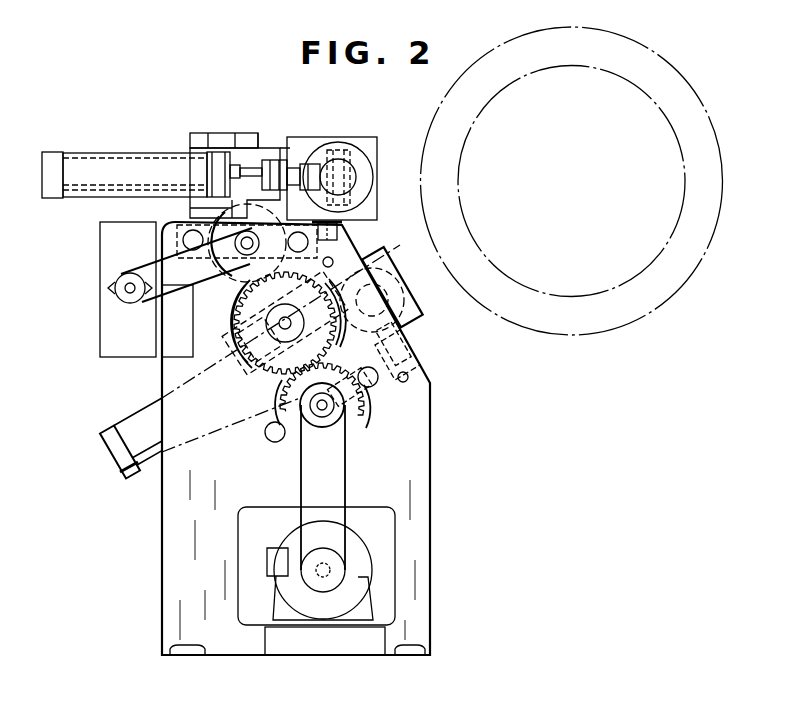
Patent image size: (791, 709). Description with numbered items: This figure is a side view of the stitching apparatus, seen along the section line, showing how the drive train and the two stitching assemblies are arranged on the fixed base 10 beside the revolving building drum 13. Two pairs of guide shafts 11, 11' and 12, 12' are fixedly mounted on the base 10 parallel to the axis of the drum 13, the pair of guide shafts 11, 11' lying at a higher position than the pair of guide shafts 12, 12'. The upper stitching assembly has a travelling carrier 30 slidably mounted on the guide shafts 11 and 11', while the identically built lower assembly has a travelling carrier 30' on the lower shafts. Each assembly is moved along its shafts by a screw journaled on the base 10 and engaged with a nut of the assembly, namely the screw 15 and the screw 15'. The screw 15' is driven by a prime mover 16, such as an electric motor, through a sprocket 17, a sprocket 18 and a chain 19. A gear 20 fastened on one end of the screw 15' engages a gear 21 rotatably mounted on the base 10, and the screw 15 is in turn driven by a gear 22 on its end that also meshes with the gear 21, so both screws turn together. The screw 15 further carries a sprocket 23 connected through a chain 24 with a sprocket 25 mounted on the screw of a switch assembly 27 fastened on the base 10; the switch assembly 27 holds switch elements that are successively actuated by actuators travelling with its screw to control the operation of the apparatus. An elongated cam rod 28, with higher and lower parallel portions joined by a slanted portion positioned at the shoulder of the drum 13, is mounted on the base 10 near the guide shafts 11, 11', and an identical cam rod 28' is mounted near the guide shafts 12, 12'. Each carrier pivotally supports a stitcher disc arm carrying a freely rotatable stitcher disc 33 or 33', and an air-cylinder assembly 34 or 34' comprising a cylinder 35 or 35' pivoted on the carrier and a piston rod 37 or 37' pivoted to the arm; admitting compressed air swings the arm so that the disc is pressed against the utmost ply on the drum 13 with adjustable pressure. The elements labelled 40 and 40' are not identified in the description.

The fixed base 10 is at (160, 567).
The guide shaft 11 is at (282, 240).
The guide shaft 11' is at (146, 243).
The guide shaft 12 is at (392, 391).
The guide shaft 12' is at (259, 454).
The revolving building drum 13 is at (571, 332).
The screw 15 is at (180, 321).
The screw 15' is at (319, 465).
The prime mover 16 is at (370, 545).
The sprocket 17 is at (306, 568).
The sprocket 18 is at (340, 428).
The chain 19 is at (347, 488).
The gear 20 is at (278, 385).
The gear 21 is at (245, 316).
The gear 22 is at (243, 257).
The sprocket 23 is at (254, 222).
The chain 24 is at (136, 303).
The sprocket 25 is at (116, 280).
The switch assembly 27 is at (100, 338).
The cam rod 28 is at (394, 280).
The cam rod 28' is at (429, 355).
The travelling carrier 30 is at (222, 156).
The travelling carrier 30' is at (276, 362).
The stitcher disc 33 is at (332, 159).
The stitcher disc 33' is at (402, 300).
The air-cylinder assembly 34 is at (244, 99).
The air-cylinder assembly 34' is at (281, 348).
The cylinder 35 is at (136, 157).
The cylinder 35' is at (116, 428).
The piston rod 37 is at (247, 137).
The piston rod 37' is at (364, 408).
The stop block 40 is at (364, 237).
The stop block 40' is at (419, 343).